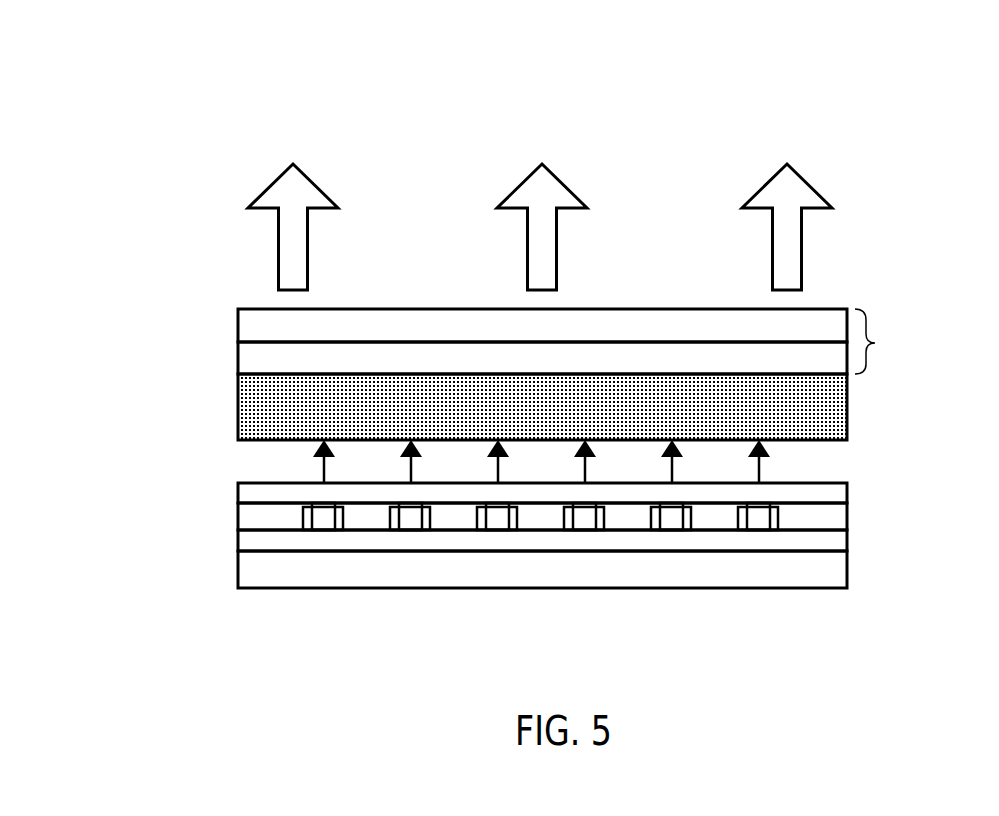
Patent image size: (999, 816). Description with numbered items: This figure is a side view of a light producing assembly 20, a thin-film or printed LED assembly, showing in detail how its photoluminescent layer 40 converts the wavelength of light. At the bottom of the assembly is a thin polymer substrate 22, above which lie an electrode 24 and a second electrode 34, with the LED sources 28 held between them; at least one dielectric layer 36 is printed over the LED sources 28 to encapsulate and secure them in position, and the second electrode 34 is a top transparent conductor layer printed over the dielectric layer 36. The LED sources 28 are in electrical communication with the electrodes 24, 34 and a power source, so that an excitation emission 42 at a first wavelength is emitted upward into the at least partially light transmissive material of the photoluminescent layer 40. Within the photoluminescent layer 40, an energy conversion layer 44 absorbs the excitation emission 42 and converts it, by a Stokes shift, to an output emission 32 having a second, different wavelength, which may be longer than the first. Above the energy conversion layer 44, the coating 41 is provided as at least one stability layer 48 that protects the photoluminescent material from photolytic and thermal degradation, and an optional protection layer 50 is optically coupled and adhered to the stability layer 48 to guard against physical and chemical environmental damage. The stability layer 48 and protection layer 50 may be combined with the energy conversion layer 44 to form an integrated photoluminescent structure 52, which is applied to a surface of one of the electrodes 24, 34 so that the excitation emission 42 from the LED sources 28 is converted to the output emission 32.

The light producing assembly 20 is at (708, 84).
The substrate 22 is at (237, 571).
The electrode 24 is at (237, 542).
The LED sources 28 is at (326, 524).
The output emission 32 is at (312, 188).
The second electrode 34 is at (237, 493).
The dielectric layer 36 is at (237, 518).
The photoluminescent layer 40 is at (237, 407).
The coating 41 is at (879, 341).
The excitation emission 42 is at (798, 464).
The energy conversion layer 44 is at (804, 407).
The stability layer 48 is at (237, 358).
The protection layer 50 is at (237, 327).
The integrated photoluminescent structure 52 is at (881, 367).